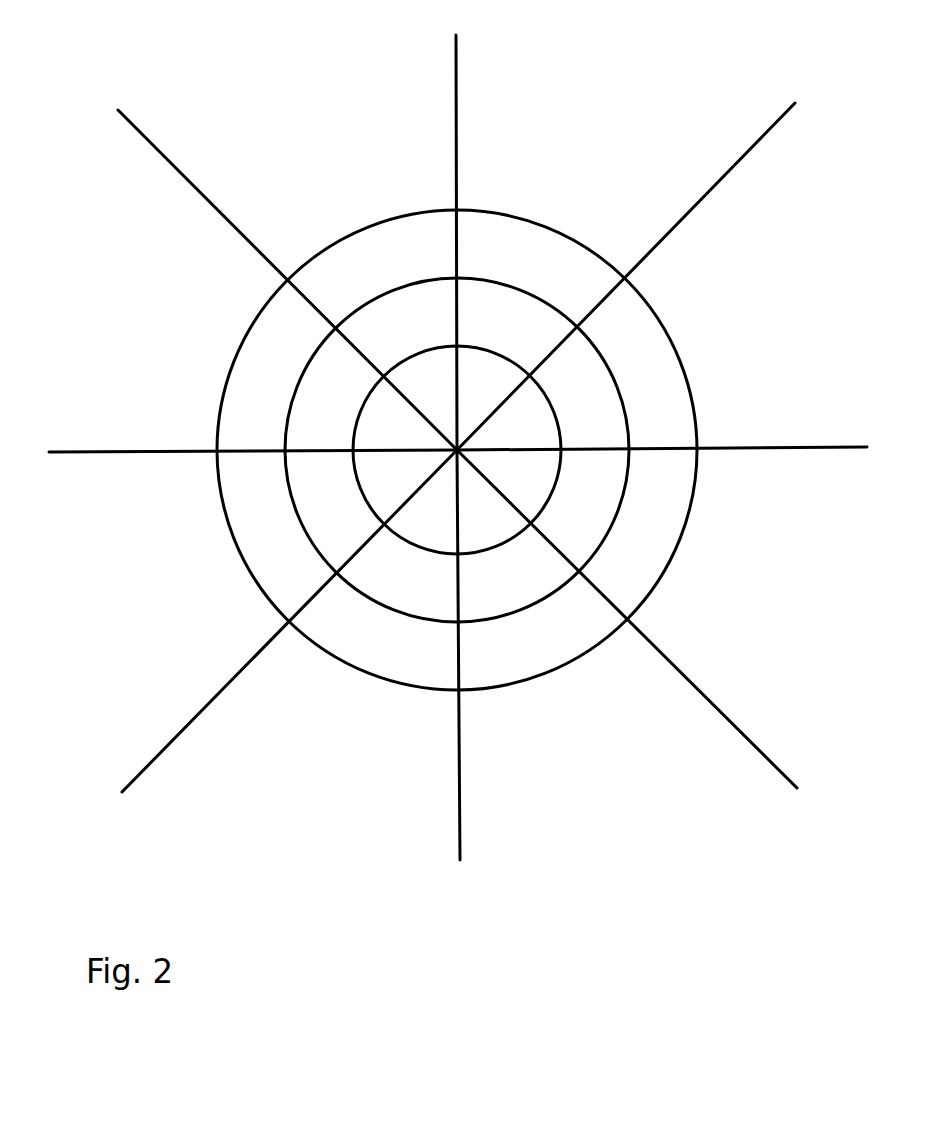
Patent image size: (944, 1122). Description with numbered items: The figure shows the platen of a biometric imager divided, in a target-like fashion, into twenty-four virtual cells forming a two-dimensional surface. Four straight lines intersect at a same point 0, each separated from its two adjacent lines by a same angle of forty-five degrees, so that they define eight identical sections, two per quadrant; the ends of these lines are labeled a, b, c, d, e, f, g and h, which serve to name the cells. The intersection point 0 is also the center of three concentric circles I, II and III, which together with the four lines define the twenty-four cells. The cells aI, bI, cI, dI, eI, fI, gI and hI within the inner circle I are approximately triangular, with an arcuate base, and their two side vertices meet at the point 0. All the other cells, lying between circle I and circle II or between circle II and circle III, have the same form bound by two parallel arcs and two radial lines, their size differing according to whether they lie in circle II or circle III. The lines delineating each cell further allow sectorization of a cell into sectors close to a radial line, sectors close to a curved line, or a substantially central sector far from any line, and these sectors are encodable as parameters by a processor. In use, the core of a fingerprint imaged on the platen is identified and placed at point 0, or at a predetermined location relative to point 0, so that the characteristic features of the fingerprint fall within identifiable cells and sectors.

The radial line a is at (457, 225).
The radial line b is at (640, 255).
The radial line c is at (679, 443).
The radial line d is at (641, 637).
The radial line e is at (460, 674).
The radial line f is at (276, 643).
The radial line g is at (236, 443).
The radial line h is at (274, 260).
The inner circle I is at (457, 450).
The middle circle II is at (457, 450).
The outer circle III is at (457, 450).
The intersection point 0 is at (451, 463).